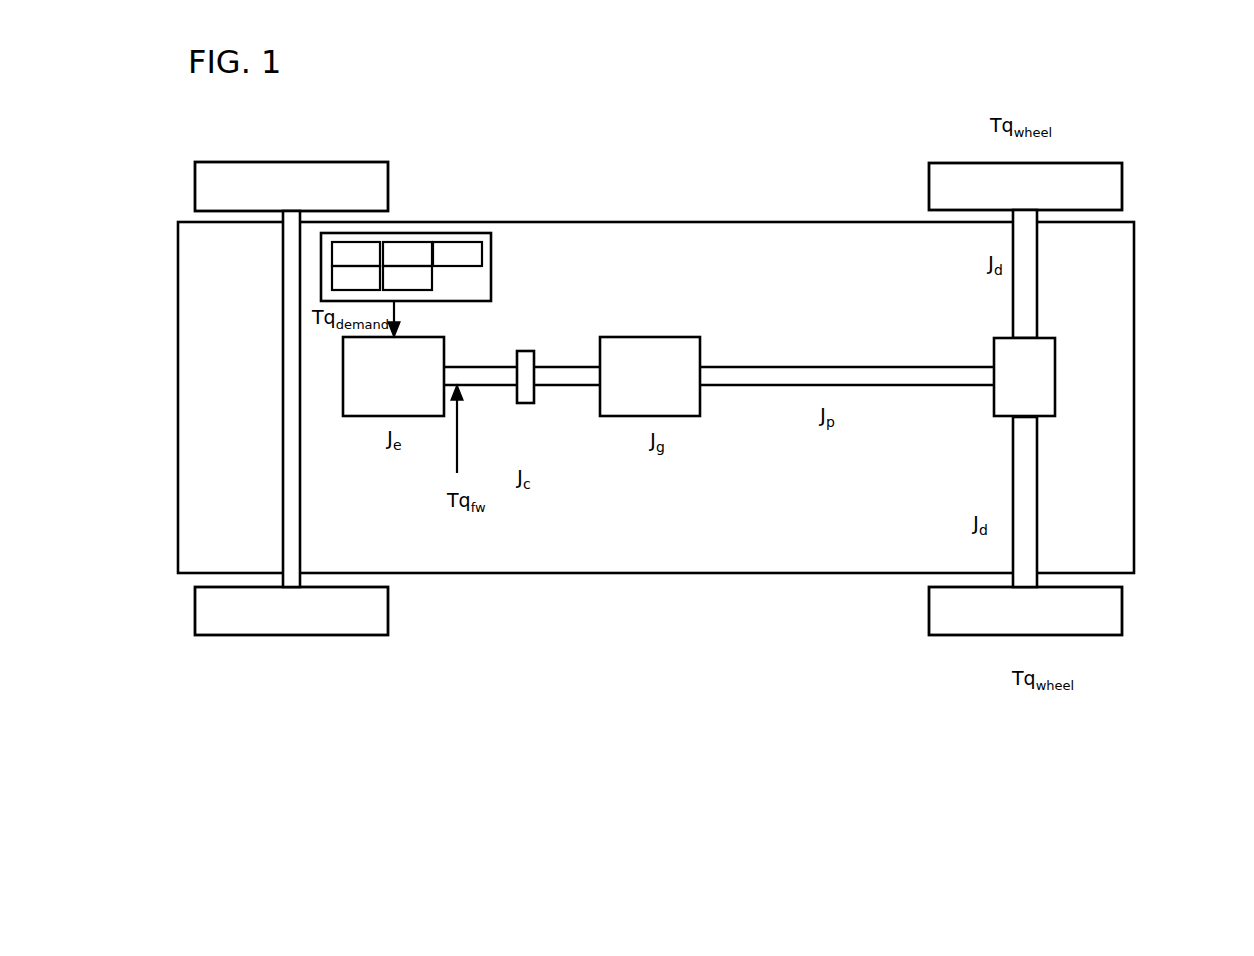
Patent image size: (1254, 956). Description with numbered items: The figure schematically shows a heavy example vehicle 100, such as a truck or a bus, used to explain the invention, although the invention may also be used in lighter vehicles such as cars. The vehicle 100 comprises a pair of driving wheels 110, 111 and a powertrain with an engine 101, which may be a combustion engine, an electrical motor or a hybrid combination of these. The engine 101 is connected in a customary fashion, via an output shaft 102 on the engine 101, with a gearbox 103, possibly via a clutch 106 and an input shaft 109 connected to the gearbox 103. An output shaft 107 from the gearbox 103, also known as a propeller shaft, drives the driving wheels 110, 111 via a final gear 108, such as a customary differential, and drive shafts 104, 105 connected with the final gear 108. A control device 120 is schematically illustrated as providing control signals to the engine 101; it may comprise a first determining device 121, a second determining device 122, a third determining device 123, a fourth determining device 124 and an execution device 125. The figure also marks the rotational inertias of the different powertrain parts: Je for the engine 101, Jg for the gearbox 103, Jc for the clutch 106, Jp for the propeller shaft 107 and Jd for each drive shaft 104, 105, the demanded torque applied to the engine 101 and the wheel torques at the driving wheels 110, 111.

The vehicle 100 is at (573, 82).
The engine 101 is at (370, 406).
The output shaft 102 is at (465, 373).
The gearbox 103 is at (650, 344).
The drive shaft 104 is at (1028, 272).
The drive shaft 105 is at (1033, 508).
The clutch 106 is at (521, 396).
The output shaft 107 is at (928, 381).
The final gear 108 is at (1050, 372).
The input shaft 109 is at (556, 373).
The driving wheel 110 is at (1117, 614).
The driving wheel 111 is at (1117, 181).
The control device 120 is at (406, 267).
The first determining device 121 is at (356, 253).
The second determining device 122 is at (356, 278).
The third determining device 123 is at (407, 253).
The fourth determining device 124 is at (407, 278).
The execution device 125 is at (457, 253).